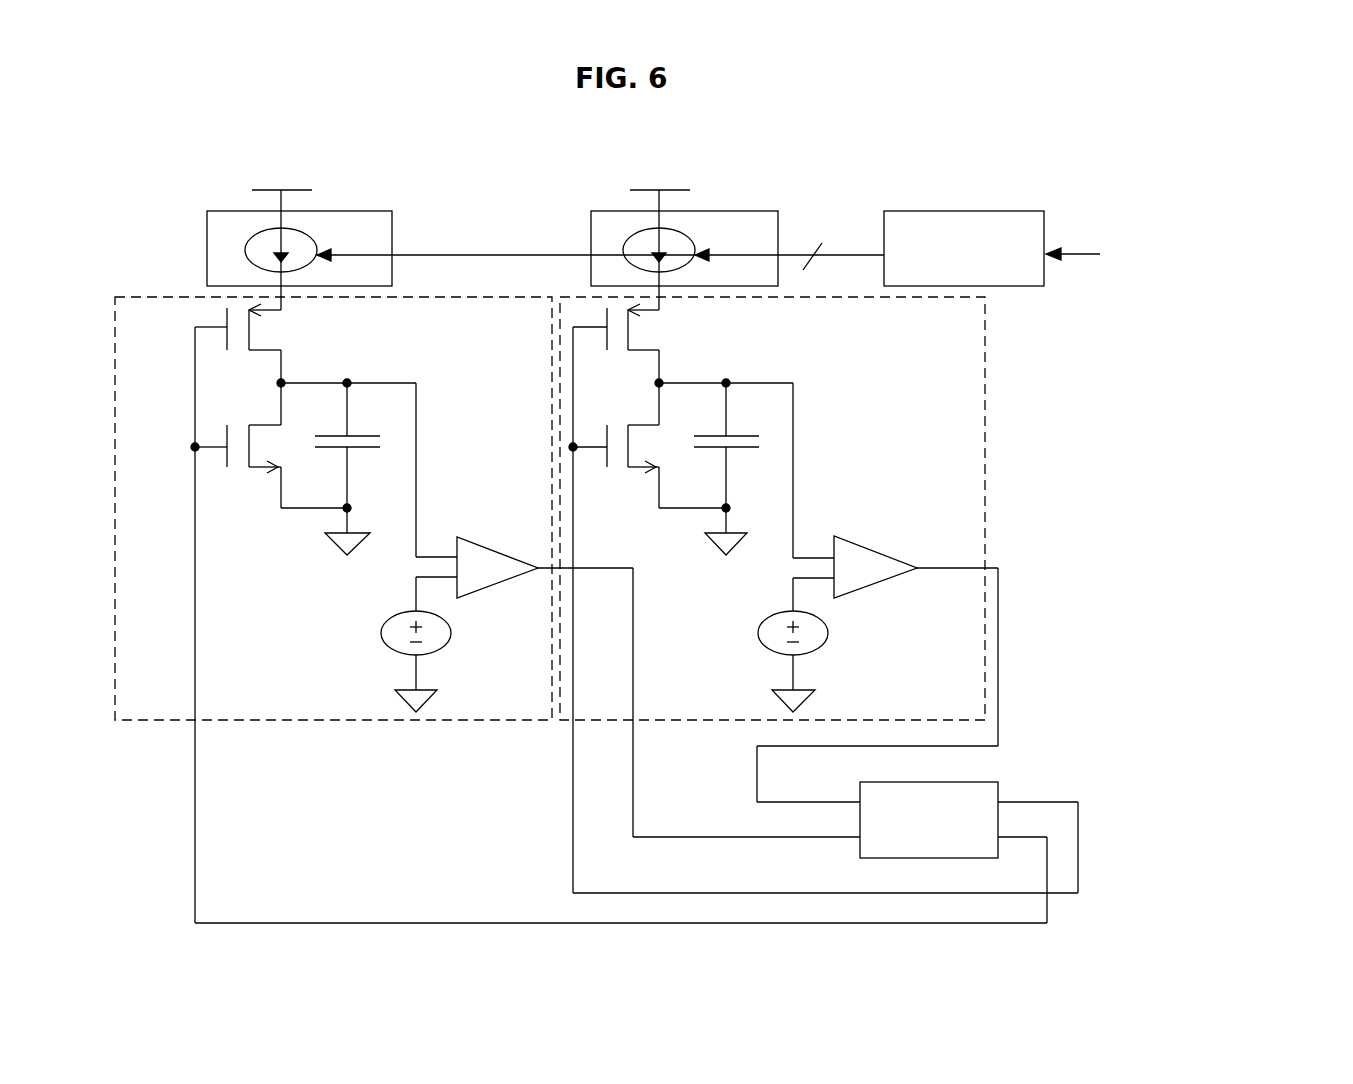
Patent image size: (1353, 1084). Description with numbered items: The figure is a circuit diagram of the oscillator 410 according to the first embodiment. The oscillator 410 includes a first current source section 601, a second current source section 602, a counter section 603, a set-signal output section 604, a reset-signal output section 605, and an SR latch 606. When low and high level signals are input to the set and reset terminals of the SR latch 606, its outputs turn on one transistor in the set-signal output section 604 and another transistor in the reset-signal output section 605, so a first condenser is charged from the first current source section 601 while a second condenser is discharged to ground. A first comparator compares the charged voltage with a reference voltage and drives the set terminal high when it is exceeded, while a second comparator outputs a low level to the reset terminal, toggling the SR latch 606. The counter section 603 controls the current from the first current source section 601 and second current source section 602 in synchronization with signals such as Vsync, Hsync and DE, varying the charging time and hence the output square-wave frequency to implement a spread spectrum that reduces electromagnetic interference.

The oscillator 410 is at (1135, 110).
The first current source section 601 is at (741, 211).
The second current source section 602 is at (354, 211).
The counter section 603 is at (1004, 211).
The set-signal output section 604 is at (690, 720).
The reset-signal output section 605 is at (300, 720).
The SR latch 606 is at (985, 782).